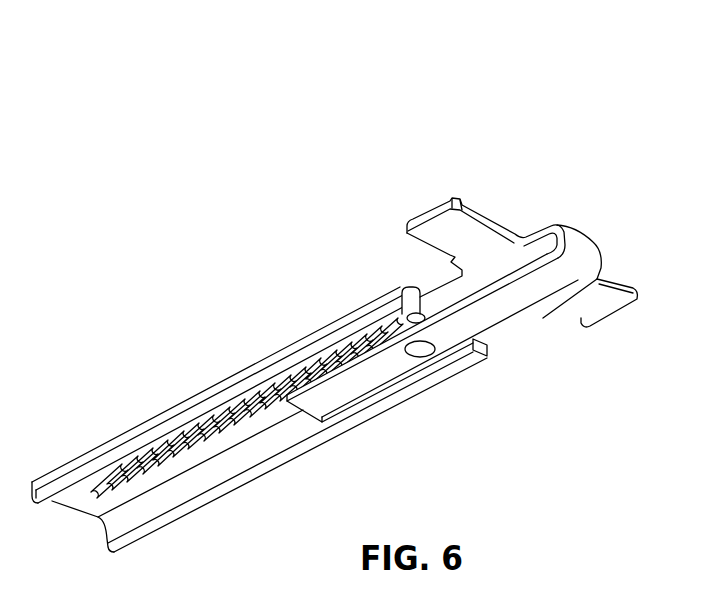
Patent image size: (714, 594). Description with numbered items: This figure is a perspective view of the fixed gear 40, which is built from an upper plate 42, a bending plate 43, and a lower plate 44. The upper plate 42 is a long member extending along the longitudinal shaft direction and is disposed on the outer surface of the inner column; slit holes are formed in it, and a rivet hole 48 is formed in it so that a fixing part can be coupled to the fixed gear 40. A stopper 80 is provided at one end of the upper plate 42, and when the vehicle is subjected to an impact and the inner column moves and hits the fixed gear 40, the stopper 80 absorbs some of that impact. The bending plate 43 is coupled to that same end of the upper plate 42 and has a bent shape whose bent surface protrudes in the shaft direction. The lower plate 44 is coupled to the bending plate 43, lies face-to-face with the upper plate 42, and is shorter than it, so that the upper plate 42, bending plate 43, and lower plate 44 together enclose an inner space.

The fixed gear 40 is at (487, 110).
The upper plate 42 is at (131, 440).
The bending plate 43 is at (582, 240).
The lower plate 44 is at (352, 392).
The rivet hole 48 is at (408, 290).
The stopper 80 is at (455, 199).